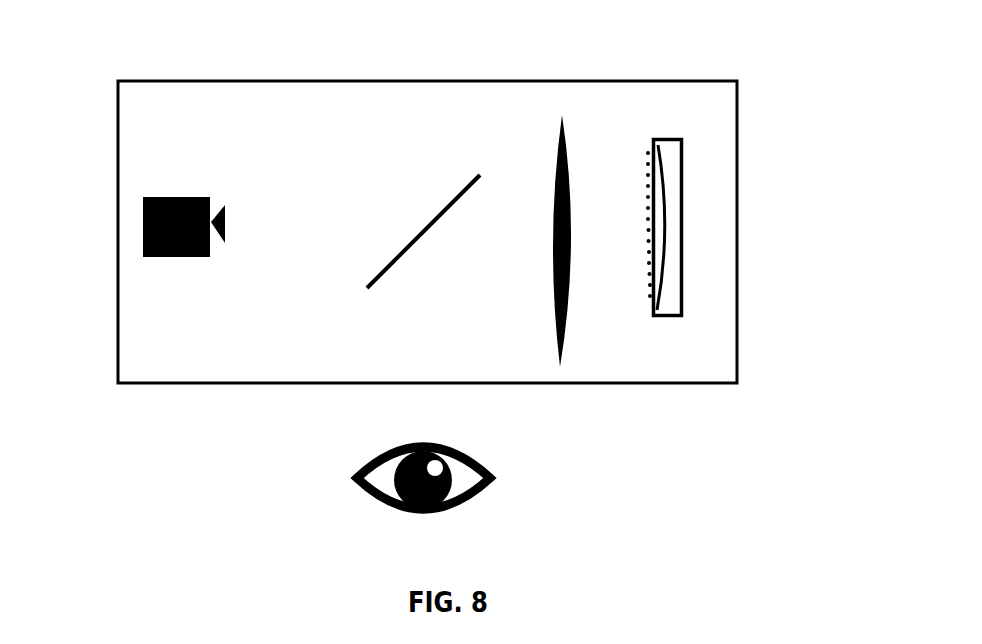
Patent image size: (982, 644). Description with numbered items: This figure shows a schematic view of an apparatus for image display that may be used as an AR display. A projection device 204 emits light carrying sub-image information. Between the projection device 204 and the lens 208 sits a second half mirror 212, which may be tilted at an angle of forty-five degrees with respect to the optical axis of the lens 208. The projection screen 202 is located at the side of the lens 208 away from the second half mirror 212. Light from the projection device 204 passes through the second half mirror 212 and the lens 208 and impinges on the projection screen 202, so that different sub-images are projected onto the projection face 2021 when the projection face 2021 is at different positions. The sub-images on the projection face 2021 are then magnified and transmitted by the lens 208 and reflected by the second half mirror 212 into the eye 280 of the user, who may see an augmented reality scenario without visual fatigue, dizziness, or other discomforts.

The projection device 204 is at (122, 255).
The second half mirror 212 is at (420, 213).
The lens 208 is at (565, 372).
The projection screen 202 is at (695, 200).
The projection face 2021 is at (668, 267).
The eye 280 is at (345, 480).